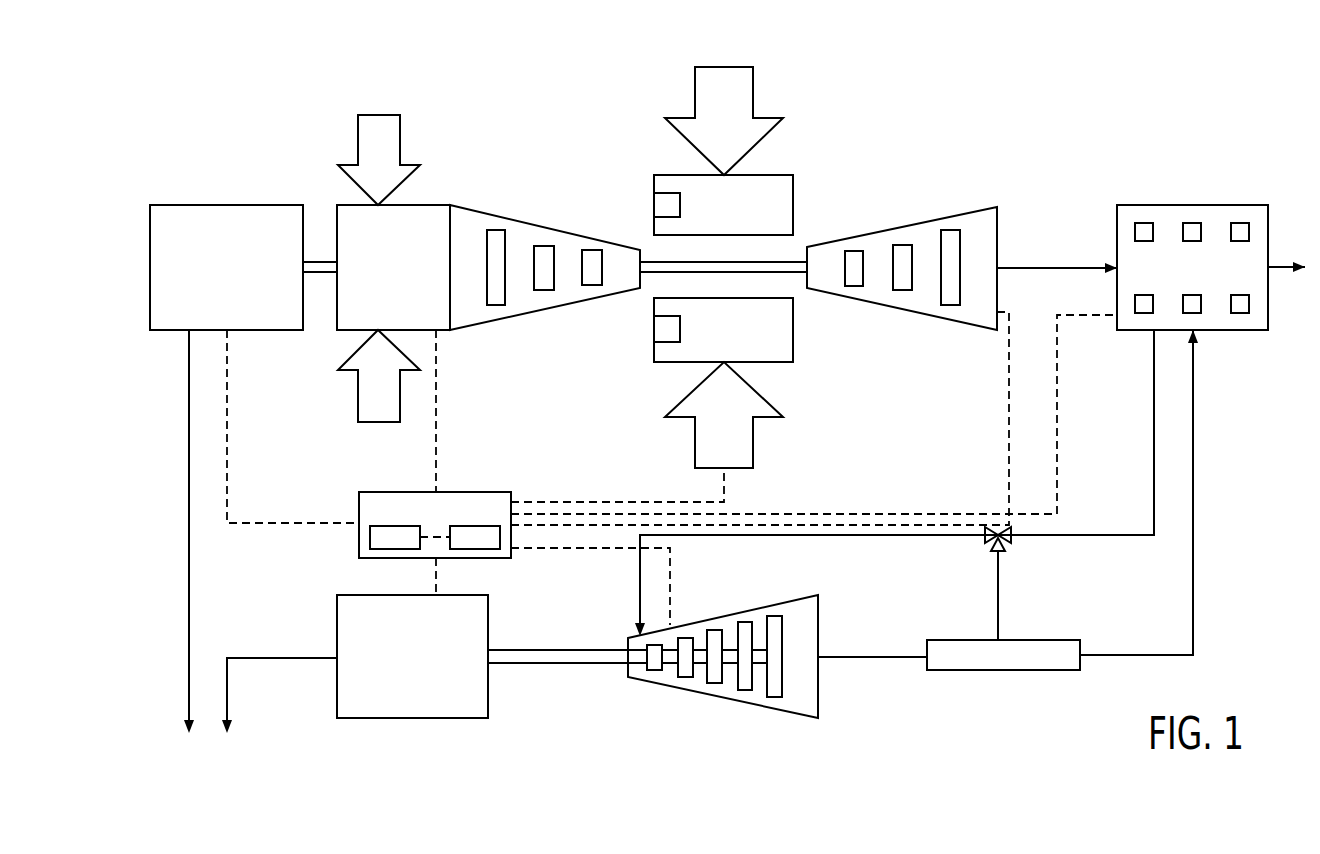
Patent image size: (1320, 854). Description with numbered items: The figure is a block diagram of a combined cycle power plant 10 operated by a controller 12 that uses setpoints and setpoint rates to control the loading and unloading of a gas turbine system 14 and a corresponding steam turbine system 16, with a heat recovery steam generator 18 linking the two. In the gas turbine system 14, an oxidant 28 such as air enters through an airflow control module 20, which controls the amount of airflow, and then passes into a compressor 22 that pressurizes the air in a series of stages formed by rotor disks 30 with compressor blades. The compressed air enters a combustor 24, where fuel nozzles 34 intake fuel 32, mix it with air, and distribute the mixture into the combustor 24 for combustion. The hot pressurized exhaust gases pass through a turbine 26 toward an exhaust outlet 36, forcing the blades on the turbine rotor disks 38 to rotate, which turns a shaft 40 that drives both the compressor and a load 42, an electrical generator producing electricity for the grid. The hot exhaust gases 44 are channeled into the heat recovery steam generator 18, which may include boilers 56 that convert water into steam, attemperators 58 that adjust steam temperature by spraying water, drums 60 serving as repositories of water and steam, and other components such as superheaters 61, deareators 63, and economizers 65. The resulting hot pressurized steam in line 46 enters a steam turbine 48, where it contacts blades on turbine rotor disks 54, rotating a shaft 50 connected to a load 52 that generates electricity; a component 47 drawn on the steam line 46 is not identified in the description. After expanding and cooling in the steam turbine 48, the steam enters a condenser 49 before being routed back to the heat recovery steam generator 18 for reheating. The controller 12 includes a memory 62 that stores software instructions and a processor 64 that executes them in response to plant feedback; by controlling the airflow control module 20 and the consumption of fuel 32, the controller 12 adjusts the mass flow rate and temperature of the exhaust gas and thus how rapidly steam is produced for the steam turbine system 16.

The combined cycle power plant 10 is at (1050, 95).
The controller 12 is at (478, 492).
The gas turbine system 14 is at (493, 150).
The steam turbine system 16 is at (885, 717).
The heat recovery steam generator 18 is at (1192, 205).
The airflow control module 20 is at (352, 205).
The compressor 22 is at (463, 330).
The combustor 24 is at (793, 195).
The turbine 26 is at (903, 227).
The oxidant 28 is at (358, 142).
The compressor rotor disks 30 is at (505, 305).
The fuel 32 is at (695, 92).
The fuel nozzles 34 is at (680, 205).
The exhaust outlet 36 is at (1000, 230).
The turbine rotor disks 38 is at (854, 286).
The shaft 40 is at (322, 272).
The load 42 is at (226, 205).
The exhaust gases 44 is at (1060, 268).
The steam line 46 is at (905, 535).
The valve 47 is at (1011, 538).
The steam turbine 48 is at (730, 615).
The condenser 49 is at (1030, 670).
The shaft 50 is at (572, 664).
The load 52 is at (414, 718).
The turbine rotor disks 54 is at (655, 670).
The boilers 56 is at (1144, 313).
The attemperators 58 is at (1201, 308).
The drums 60 is at (1249, 304).
The superheaters 61 is at (1144, 223).
The memory 62 is at (392, 549).
The deareators 63 is at (1192, 223).
The processor 64 is at (485, 549).
The economizers 65 is at (1240, 223).